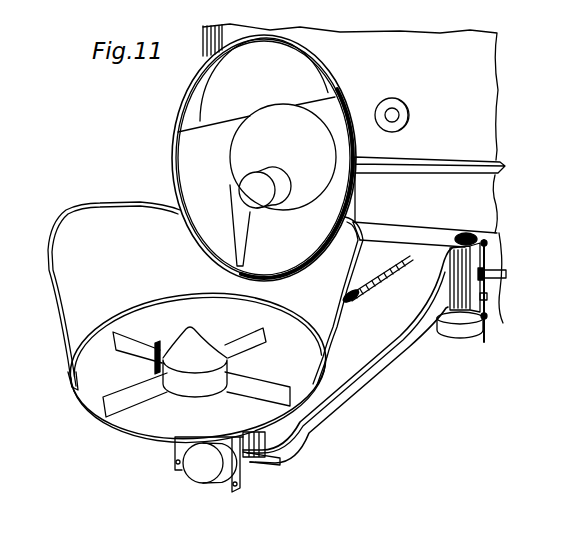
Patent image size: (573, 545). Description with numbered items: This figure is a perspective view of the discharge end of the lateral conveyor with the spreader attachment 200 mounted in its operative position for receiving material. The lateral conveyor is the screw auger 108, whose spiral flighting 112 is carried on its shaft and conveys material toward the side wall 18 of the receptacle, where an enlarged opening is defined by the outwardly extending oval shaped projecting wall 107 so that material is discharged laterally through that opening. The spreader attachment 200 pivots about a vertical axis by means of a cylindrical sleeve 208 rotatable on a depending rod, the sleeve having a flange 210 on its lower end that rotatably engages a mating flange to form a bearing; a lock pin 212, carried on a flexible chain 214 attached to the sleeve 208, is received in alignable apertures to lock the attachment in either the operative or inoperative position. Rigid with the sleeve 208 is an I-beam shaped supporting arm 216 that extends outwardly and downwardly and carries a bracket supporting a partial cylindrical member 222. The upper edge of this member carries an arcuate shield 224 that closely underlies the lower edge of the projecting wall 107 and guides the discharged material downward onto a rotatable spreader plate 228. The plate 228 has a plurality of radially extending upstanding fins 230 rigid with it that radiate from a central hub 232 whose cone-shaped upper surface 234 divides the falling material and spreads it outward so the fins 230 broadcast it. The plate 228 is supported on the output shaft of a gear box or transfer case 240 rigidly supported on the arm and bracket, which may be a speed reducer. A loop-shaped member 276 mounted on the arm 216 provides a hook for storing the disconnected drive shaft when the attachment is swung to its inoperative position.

The side wall 18 is at (483, 95).
The oval shaped projecting wall 107 is at (327, 80).
The spiral flighting 112 is at (265, 122).
The arcuate shield 224 is at (83, 223).
The partial cylindrical member 222 is at (77, 353).
The rotatable spreader plate 228 is at (153, 428).
The radially extending upstanding fins 230 is at (117, 400).
The central hub 232 is at (208, 388).
The cone-shaped upper surface 234 is at (190, 327).
The gear box or transfer case 240 is at (228, 492).
The spreader attachment 200 is at (361, 405).
The supporting arm 216 is at (372, 352).
The loop-shaped member 276 is at (367, 310).
The flange 210 is at (472, 325).
The cylindrical sleeve 208 is at (514, 248).
The flexible chain 214 is at (487, 297).
The lock pin 212 is at (482, 341).
The screw auger 108 is at (556, 472).